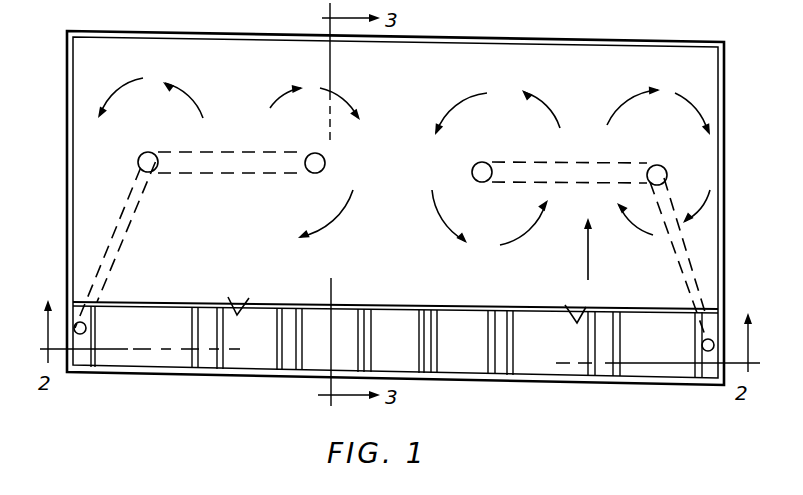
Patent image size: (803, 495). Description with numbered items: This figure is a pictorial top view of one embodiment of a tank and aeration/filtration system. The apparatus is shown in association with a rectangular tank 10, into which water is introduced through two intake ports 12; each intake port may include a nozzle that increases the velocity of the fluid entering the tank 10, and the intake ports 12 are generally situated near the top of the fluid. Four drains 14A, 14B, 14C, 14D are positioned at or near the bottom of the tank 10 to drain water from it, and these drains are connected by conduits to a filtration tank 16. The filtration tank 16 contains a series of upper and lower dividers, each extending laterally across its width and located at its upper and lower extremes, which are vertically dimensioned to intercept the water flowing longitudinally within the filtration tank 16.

The tank 10 is at (221, 32).
The intake ports 12 is at (249, 298).
The drain 14A is at (147, 158).
The drain 14B is at (315, 160).
The drain 14C is at (482, 170).
The drain 14D is at (670, 135).
The filtration tank 16 is at (235, 376).